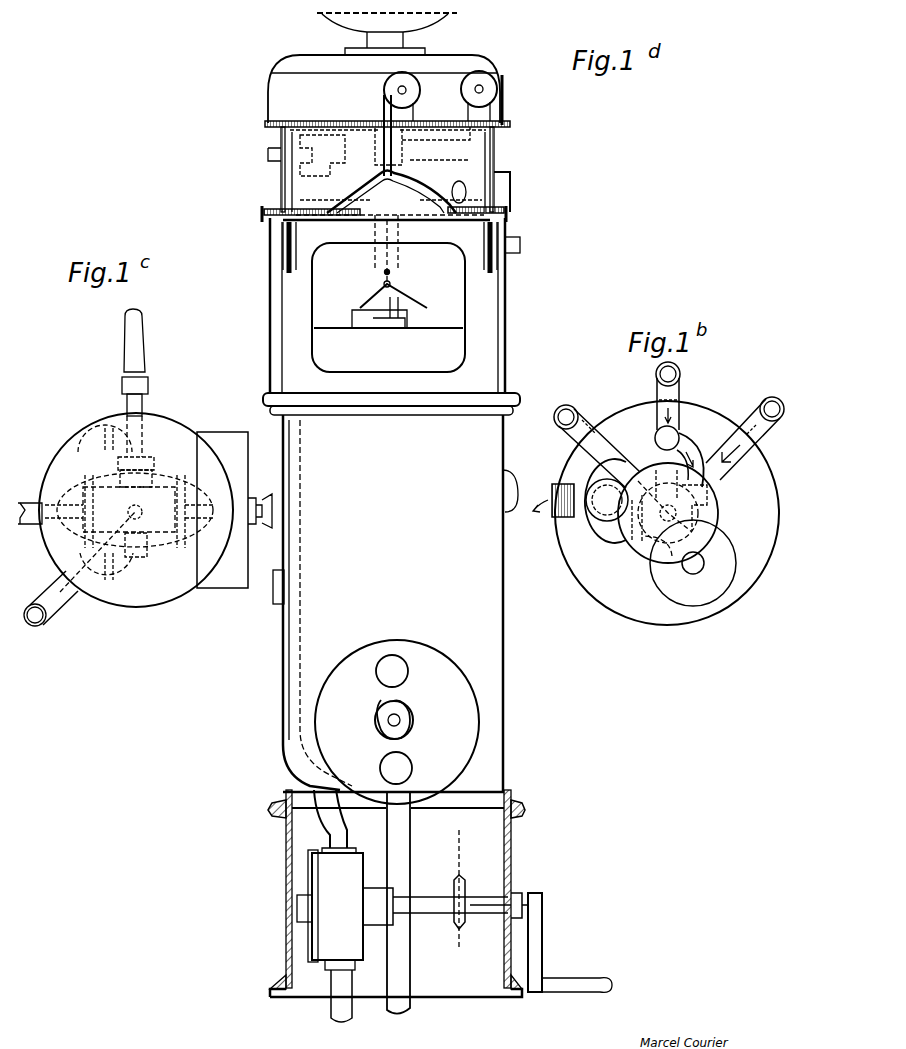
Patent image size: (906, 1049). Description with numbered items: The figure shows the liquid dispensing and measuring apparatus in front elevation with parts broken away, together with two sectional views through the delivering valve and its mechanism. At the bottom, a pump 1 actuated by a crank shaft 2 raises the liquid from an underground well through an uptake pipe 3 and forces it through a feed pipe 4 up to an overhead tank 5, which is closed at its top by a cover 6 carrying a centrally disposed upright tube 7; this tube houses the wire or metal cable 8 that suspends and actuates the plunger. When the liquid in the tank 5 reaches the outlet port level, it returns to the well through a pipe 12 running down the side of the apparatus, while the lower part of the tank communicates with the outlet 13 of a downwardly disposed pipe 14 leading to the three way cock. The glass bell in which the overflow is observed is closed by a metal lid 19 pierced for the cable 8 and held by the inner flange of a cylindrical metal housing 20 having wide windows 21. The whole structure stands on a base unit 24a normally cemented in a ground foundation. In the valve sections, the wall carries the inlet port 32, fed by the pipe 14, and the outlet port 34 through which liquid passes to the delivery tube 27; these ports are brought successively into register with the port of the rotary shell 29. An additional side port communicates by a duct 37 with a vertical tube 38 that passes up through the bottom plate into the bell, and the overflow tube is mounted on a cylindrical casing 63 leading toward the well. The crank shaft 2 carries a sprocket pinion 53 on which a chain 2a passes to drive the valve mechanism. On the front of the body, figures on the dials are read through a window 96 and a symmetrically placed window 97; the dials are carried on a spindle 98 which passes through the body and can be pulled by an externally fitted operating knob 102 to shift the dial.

In FIG. 1D, the pump 1 is at (325, 868).
In FIG. 1D, the crank shaft 2 is at (520, 912).
In FIG. 1D, the chain 2a is at (511, 838).
In FIG. 1D, the uptake pipe 3 is at (340, 978).
In FIG. 1D, the feed pipe 4 is at (282, 169).
In FIG. 1D, the overhead tank 5 is at (305, 182).
In FIG. 1D, the cover 6 is at (266, 123).
In FIG. 1D, the upright tube 7 is at (420, 166).
In FIG. 1D, the cable 8 is at (384, 111).
In FIG. 1D, the pipe 12 is at (372, 200).
In FIG. 1D, the outlet 13 is at (468, 188).
In FIG. 1D, the downwardly disposed pipe 14 is at (506, 352).
In FIG. 1D, the metal lid 19 is at (500, 199).
In FIG. 1D, the cylindrical metal housing 20 is at (285, 232).
In FIG. 1D, the windows 21 is at (325, 262).
In FIG. 1D, the base unit 24a is at (312, 893).
In FIG. 1B, the tube 27 is at (598, 492).
In FIG. 1B, the rotary shell 29 is at (716, 533).
In FIG. 1B, the inlet port 32 is at (714, 487).
In FIG. 1B, the outlet port 34 is at (600, 536).
In FIG. 1B, the duct 37 is at (656, 440).
In FIG. 1C, the vertical tube 38 is at (27, 526).
In FIG. 1D, the sprocket pinion 53 is at (468, 888).
In FIG. 1B, the cylindrical casing 63 is at (728, 566).
In FIG. 1D, the window 96 is at (408, 671).
In FIG. 1D, the window 97 is at (410, 778).
In FIG. 1D, the spindle 98 is at (401, 718).
In FIG. 1D, the operating knob 102 is at (409, 730).